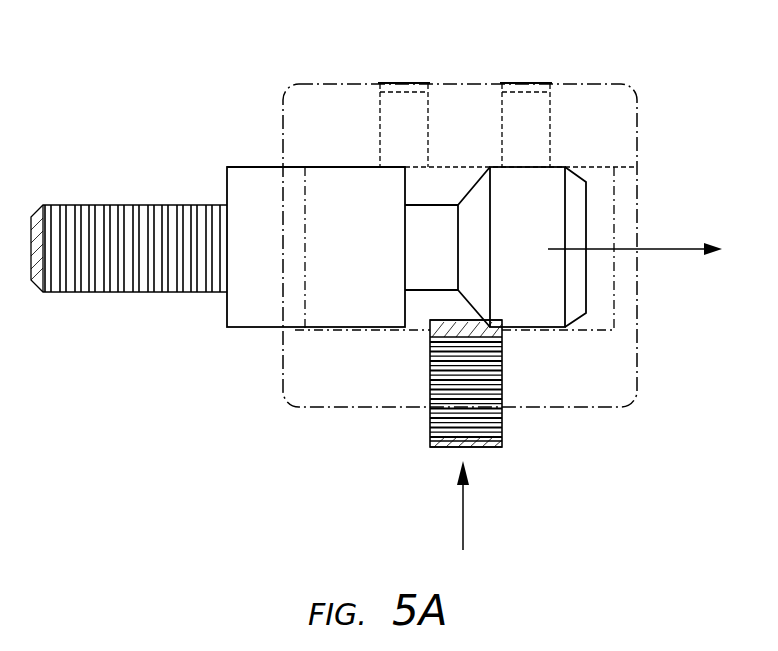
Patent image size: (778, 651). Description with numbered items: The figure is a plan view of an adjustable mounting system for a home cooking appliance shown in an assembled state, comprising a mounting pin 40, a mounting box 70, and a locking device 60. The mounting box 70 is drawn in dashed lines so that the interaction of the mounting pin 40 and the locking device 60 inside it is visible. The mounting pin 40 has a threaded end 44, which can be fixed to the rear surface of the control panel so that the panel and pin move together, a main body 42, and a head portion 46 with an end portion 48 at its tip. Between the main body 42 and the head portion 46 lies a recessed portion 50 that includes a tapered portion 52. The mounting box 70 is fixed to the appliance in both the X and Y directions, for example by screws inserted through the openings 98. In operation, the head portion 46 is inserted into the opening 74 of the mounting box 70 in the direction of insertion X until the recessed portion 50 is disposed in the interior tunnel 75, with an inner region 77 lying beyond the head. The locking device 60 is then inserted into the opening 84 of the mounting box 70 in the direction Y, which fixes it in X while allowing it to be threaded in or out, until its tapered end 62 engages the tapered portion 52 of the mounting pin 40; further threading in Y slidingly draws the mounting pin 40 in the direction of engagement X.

The mounting pin 40 is at (125, 177).
The main body 42 is at (248, 328).
The threaded end 44 is at (87, 293).
The head portion 46 is at (524, 217).
The chamfered end portion 48 is at (587, 193).
The recessed portion 50 is at (416, 244).
The tapered portion 52 is at (458, 273).
The locking device 60 is at (423, 420).
The tapered end 62 is at (433, 325).
The mounting box 70 is at (660, 415).
The opening 74 is at (280, 198).
The tunnel 75 is at (463, 165).
The inner clearance region 77 is at (638, 305).
The opening 84 is at (503, 418).
The openings 98 is at (410, 82).